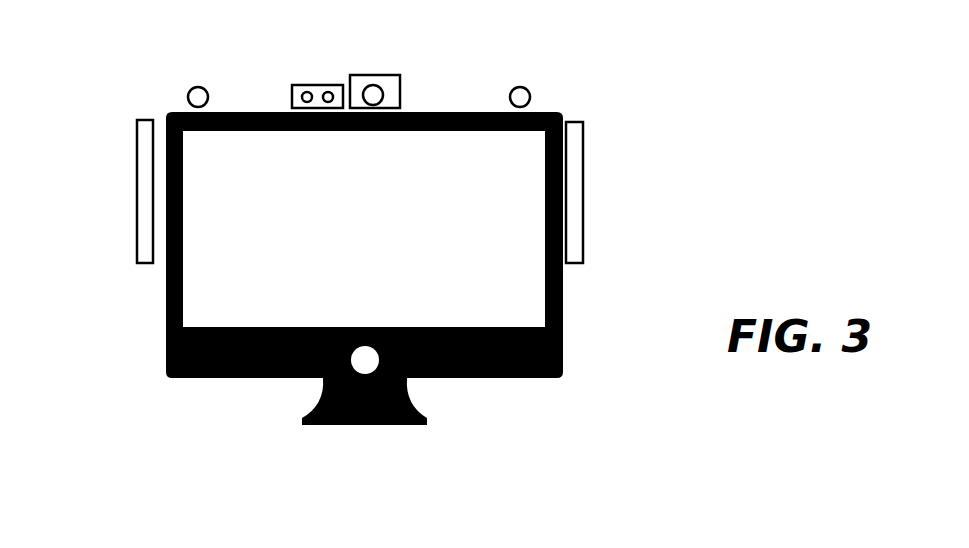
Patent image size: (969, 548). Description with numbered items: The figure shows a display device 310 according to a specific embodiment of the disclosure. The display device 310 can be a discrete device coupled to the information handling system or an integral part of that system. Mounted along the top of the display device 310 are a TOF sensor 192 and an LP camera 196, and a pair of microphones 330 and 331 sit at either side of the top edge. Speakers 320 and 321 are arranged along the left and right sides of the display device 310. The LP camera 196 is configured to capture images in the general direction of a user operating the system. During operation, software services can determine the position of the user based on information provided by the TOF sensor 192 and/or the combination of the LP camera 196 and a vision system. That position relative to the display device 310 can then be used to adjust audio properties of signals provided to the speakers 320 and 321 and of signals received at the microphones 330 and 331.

The display device 310 is at (165, 310).
The speaker 320 is at (135, 190).
The speaker 321 is at (583, 190).
The microphone 330 is at (195, 82).
The microphone 331 is at (523, 85).
The TOF sensor 192 is at (317, 85).
The LP camera 196 is at (383, 75).